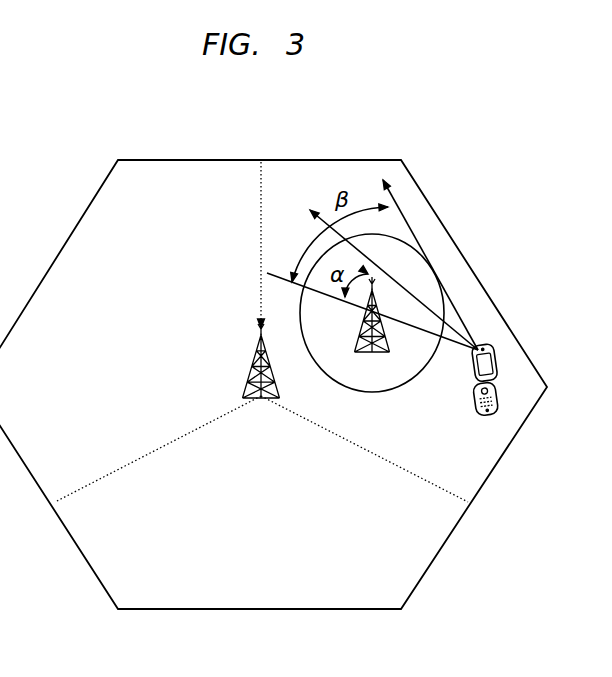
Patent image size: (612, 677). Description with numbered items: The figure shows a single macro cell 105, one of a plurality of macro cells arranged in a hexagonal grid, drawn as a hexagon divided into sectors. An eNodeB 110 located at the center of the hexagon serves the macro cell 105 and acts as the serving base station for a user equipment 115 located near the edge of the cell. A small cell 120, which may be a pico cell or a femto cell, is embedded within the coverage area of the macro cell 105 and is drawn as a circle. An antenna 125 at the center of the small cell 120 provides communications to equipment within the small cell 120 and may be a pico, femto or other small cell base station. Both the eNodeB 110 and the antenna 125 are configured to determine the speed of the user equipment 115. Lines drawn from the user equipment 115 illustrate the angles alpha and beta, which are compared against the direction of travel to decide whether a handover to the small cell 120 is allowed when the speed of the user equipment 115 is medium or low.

The macro cell 105 is at (211, 160).
The eNodeB 110 is at (258, 397).
The user equipment 115 is at (467, 410).
The small cell 120 is at (374, 393).
The antenna 125 is at (360, 357).